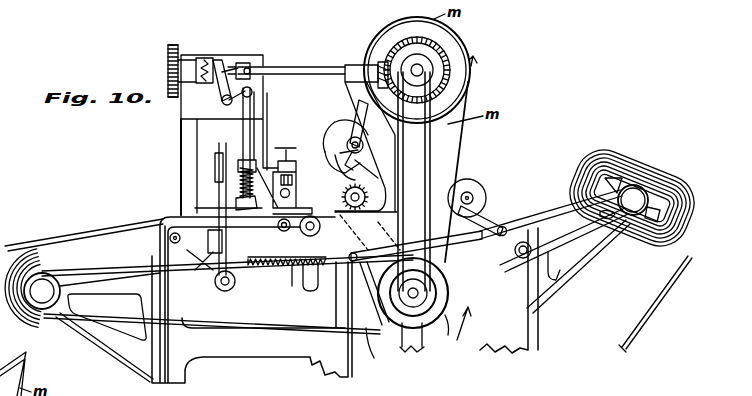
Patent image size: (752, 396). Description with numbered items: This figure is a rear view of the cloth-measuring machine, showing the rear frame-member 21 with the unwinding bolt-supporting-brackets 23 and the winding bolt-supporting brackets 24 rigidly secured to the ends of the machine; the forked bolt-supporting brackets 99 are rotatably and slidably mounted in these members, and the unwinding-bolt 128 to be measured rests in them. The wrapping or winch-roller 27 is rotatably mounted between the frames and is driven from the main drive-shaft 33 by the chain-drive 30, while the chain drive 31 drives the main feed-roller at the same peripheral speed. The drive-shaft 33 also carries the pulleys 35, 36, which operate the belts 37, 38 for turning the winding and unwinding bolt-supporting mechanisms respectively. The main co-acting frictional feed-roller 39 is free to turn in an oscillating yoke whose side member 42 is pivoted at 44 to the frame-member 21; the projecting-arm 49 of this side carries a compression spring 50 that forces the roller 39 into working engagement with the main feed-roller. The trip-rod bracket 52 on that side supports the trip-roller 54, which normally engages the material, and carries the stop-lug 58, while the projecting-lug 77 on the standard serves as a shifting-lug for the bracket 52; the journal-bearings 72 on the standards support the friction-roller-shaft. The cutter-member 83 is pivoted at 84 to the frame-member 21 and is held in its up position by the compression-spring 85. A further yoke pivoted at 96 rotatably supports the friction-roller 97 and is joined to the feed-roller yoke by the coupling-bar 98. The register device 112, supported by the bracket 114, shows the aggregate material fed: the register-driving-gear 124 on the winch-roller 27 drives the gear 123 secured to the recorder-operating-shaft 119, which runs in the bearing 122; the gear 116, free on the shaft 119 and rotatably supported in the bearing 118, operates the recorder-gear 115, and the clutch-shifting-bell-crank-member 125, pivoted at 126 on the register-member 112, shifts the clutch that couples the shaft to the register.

The rear frame-member 21 is at (293, 347).
The unwinding bolt-supporting-brackets 23 is at (583, 262).
The winding bolt-supporting brackets 24 is at (87, 334).
The wrapping or winch-roller 27 is at (478, 22).
The chain-drive 30 is at (440, 146).
The chain drive 31 is at (364, 283).
The main drive-shaft 33 is at (412, 300).
The pulley 35 is at (470, 340).
The pulley 36 is at (427, 311).
The belt 37 is at (379, 351).
The belt 38 is at (631, 198).
The main co-acting frictional feed-roller 39 is at (346, 126).
The side member of the yoke-member 42 is at (362, 220).
The pivot 44 is at (350, 219).
The projecting-arm 49 is at (307, 288).
The compression springs 50 is at (285, 270).
The trip-rod bracket 52 is at (342, 142).
The trip-roller 54 is at (362, 112).
The stop-lug 58 is at (344, 178).
The journal-bearings 72 is at (313, 219).
The projecting-lug 77 is at (302, 157).
The cutter-member 83 is at (201, 192).
The pivot 84 is at (218, 238).
The compression-spring 85 is at (231, 289).
The pivot 96 is at (522, 262).
The friction-roller 97 is at (482, 178).
The coupling-bar 98 is at (506, 222).
The bolt-supporting brackets 99 is at (655, 206).
The register device 112 is at (193, 100).
The bracket 114 is at (183, 180).
The recorder-gear 115 is at (171, 46).
The gear 116 is at (170, 80).
The bearing 118 is at (189, 62).
The recorder-operating-shaft 119 is at (302, 67).
The bearing 122 is at (353, 63).
The gear 123 is at (384, 61).
The register-driving-gear 124 is at (441, 53).
The clutch-shifting-bell-crank-member 125 is at (221, 103).
The pivot 126 is at (219, 147).
The unwinding-bolt 128 is at (364, 190).